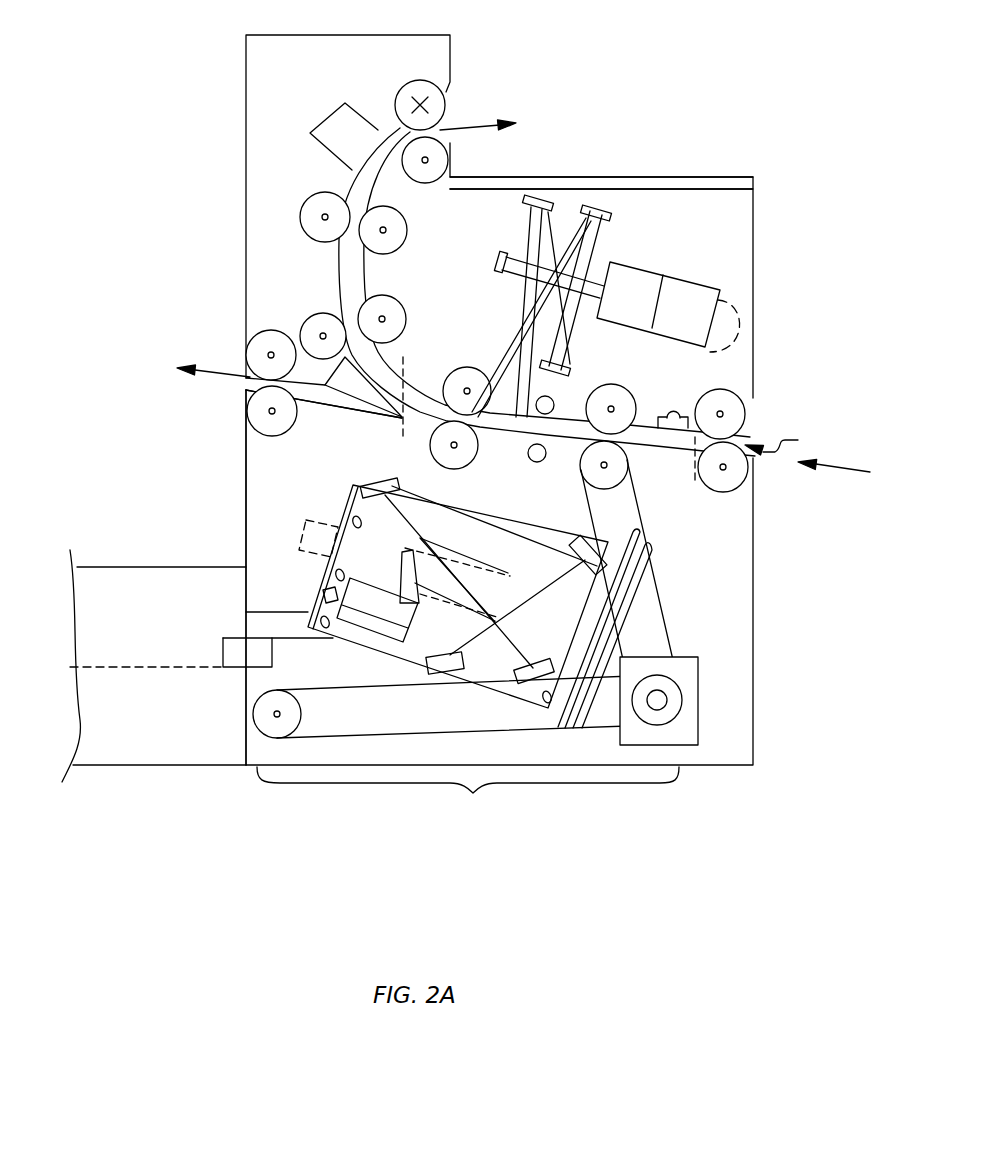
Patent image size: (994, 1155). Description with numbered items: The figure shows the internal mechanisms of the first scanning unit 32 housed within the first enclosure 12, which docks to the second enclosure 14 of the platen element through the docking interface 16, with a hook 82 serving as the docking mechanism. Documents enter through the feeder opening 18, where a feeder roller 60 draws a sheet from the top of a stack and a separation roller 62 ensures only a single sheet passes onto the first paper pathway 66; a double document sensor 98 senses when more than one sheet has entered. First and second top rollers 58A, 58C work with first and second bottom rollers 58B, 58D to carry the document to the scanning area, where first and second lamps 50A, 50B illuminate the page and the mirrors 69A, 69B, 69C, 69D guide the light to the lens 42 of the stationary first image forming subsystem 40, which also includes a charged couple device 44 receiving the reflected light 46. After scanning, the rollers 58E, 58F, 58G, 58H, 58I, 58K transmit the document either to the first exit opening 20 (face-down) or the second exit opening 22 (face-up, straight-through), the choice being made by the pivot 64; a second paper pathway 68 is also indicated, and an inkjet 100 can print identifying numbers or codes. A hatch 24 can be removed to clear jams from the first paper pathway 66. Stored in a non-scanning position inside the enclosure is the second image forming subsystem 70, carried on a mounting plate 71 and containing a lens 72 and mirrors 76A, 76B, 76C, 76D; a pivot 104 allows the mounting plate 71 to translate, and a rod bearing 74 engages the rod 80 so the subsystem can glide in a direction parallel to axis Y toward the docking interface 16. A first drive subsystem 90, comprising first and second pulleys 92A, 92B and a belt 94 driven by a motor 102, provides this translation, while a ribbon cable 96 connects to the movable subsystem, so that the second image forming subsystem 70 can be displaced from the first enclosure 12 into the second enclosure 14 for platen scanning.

The first enclosure 12 is at (772, 665).
The second enclosure 14 is at (119, 550).
The docking interface 16 is at (237, 785).
The feeder opening 18 is at (807, 448).
The first exit opening 20 is at (458, 118).
The second exit opening 22 is at (205, 372).
The hatch 24 is at (706, 198).
The first scanning unit 32 is at (346, 872).
The first image forming subsystem 40 is at (669, 283).
The lens 42 is at (633, 283).
The charged couple device 44 is at (698, 293).
The reflected light 46 is at (498, 356).
The first lamp 50A is at (553, 400).
The second lamp 50B is at (534, 463).
The first top roller 58A is at (634, 402).
The first bottom roller 58B is at (624, 477).
The second top roller 58C is at (467, 367).
The second bottom roller 58D is at (430, 445).
The roller 58E is at (399, 302).
The roller 58F is at (308, 320).
The roller 58G is at (410, 232).
The roller 58H is at (308, 199).
The roller 58I is at (449, 165).
The roller 58K is at (433, 83).
The feeder roller 60 is at (744, 418).
The separation roller 62 is at (744, 479).
The pivot 64 is at (371, 410).
The first paper pathway 66 is at (339, 273).
The second paper pathway 68 is at (300, 390).
The first mirror 69A is at (602, 208).
The second mirror 69B is at (546, 195).
The third mirror 69C is at (497, 264).
The fourth mirror 69D is at (572, 367).
The second image forming subsystem 70 is at (436, 591).
The mounting plate 71 is at (322, 594).
The lens 72 is at (363, 590).
The rod bearing 74 is at (494, 593).
The first mirror 76A is at (405, 486).
The second mirror 76B is at (587, 565).
The third mirror 76C is at (532, 664).
The fourth mirror 76D is at (462, 672).
The rod 80 is at (320, 638).
The hook 82 is at (273, 650).
The first drive subsystem 90 is at (541, 648).
The first pulley 92A is at (676, 684).
The second pulley 92B is at (298, 703).
The belt 94 is at (417, 722).
The ribbon cable 96 is at (645, 560).
The double document sensor 98 is at (660, 410).
The inkjet 100 is at (330, 120).
The motor 102 is at (688, 724).
The pivot 104 is at (452, 542).
The axis Y is at (143, 650).